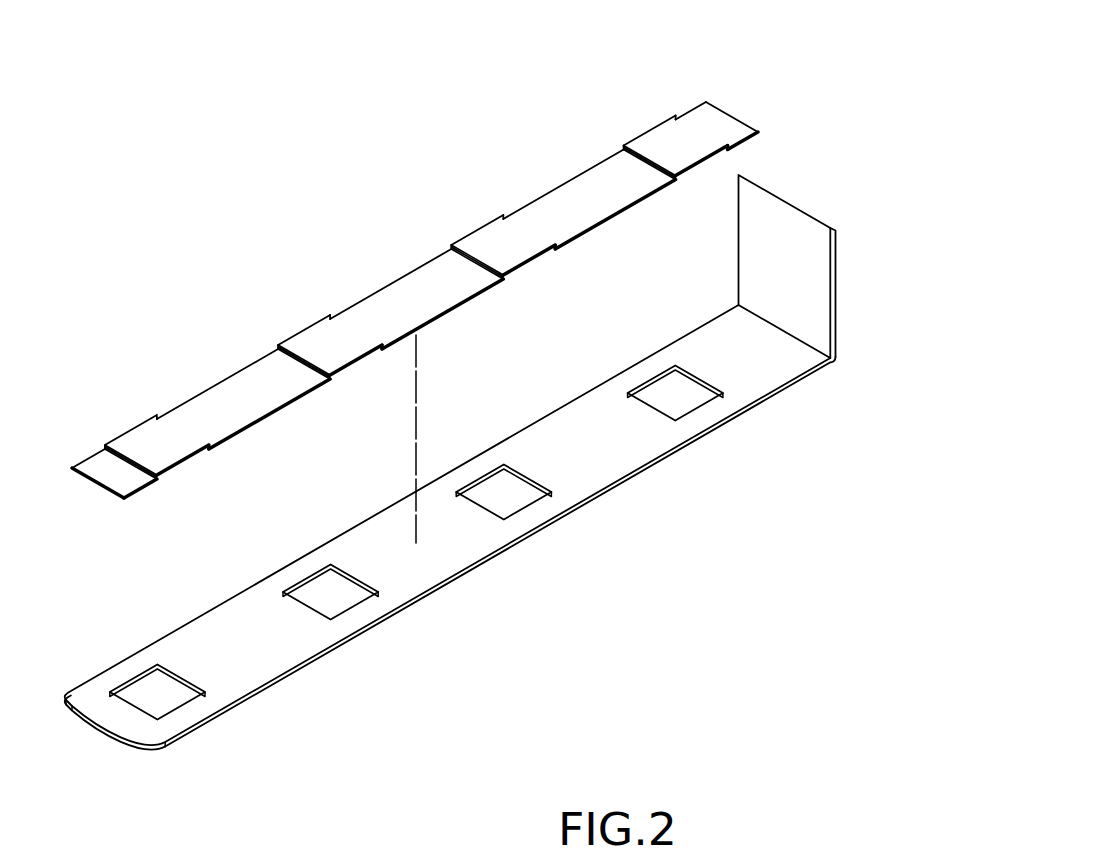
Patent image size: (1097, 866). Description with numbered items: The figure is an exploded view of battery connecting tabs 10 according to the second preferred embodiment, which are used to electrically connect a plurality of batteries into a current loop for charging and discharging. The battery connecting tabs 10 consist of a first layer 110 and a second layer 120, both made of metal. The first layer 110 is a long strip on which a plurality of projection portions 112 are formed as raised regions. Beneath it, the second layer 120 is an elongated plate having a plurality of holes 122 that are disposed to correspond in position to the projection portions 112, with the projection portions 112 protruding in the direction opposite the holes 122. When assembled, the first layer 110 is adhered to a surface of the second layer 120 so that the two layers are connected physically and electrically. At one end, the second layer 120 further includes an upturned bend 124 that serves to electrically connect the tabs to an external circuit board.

The battery connecting tabs 10 is at (459, 44).
The first layer 110 is at (387, 296).
The projection portions 112 is at (146, 436).
The second layer 120 is at (387, 527).
The holes 122 is at (146, 688).
The bend 124 is at (838, 258).